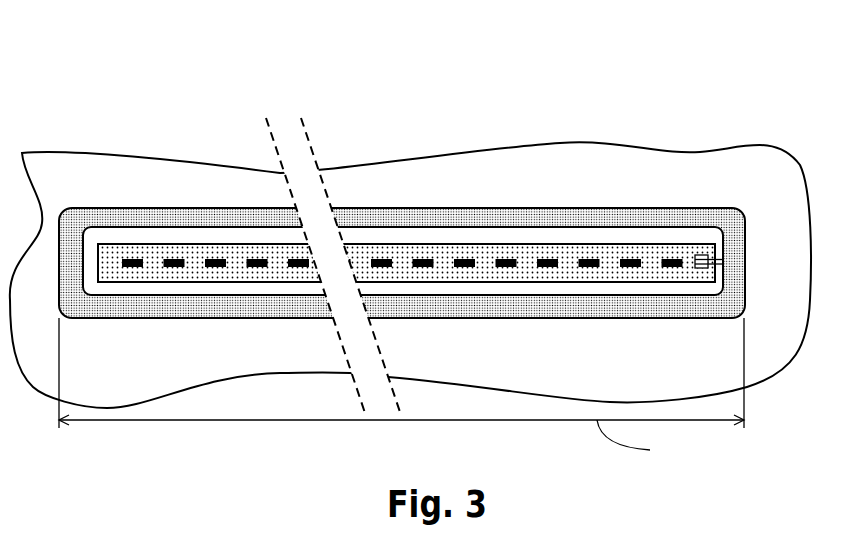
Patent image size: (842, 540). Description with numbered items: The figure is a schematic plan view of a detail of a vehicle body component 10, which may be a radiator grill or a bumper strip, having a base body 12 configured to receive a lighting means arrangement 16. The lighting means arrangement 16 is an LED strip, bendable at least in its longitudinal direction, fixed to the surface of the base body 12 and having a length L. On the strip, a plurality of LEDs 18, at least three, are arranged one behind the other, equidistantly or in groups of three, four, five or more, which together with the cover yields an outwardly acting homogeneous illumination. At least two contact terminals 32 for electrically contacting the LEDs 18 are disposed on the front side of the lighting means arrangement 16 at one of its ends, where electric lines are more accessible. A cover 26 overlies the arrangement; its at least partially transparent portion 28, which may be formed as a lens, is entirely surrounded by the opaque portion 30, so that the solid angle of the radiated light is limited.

The vehicle body component 10 is at (410, 244).
The base body 12 is at (103, 183).
The lighting means arrangement 16 is at (387, 244).
The LEDs 18 is at (218, 260).
The cover 26 is at (667, 207).
The at least partially transparent portion 28 is at (425, 237).
The opaque portion 30 is at (522, 215).
The contact terminals 32 is at (712, 255).